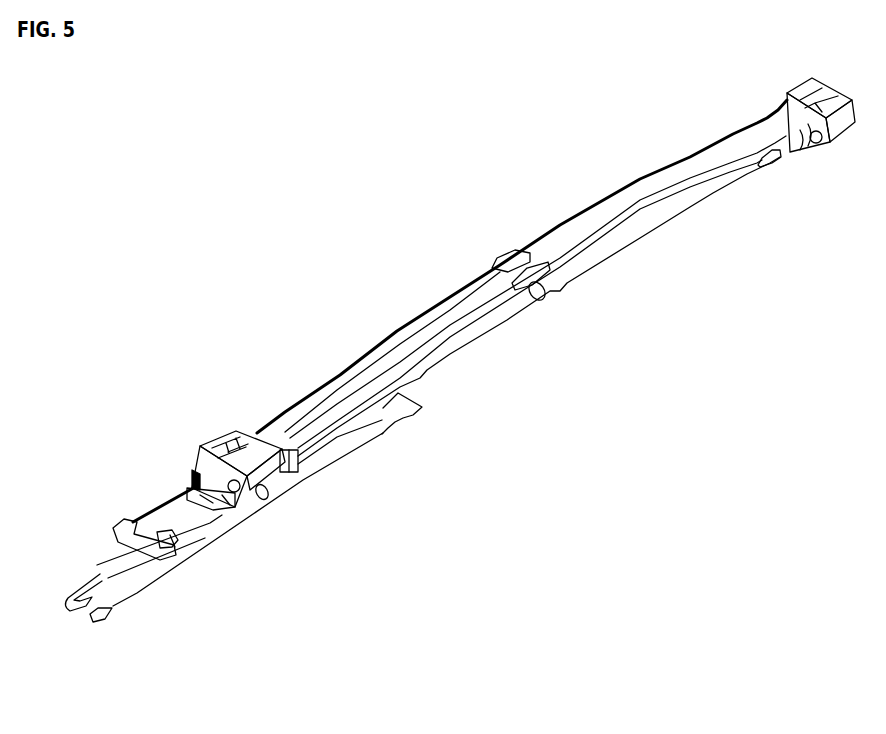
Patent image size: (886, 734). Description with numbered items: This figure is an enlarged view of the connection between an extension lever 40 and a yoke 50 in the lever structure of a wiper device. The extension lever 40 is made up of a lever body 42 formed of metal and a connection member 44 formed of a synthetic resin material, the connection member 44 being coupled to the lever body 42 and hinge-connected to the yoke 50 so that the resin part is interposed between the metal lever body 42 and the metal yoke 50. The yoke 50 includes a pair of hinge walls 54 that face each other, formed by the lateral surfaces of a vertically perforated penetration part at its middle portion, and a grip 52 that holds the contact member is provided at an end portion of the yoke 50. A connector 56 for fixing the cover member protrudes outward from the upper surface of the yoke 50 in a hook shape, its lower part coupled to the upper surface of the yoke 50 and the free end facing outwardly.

The extension lever 40 is at (335, 276).
The lever body 42 is at (337, 388).
The connection member 44 is at (242, 444).
The yoke 50 is at (207, 537).
The grip 52 is at (107, 612).
The hinge walls 54 is at (278, 480).
The connector 56 is at (128, 520).